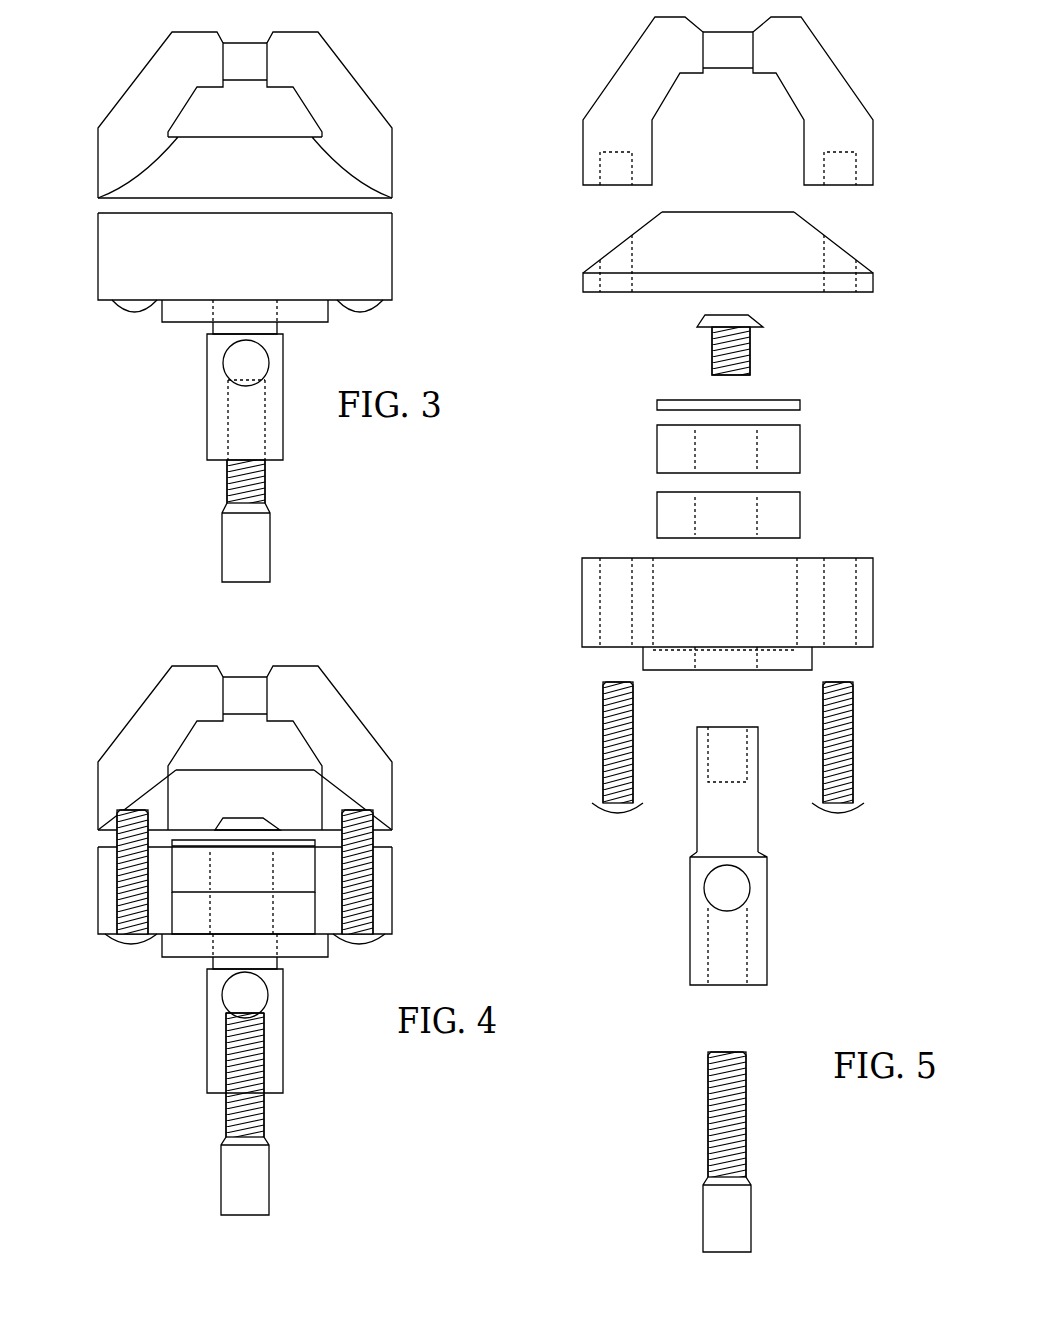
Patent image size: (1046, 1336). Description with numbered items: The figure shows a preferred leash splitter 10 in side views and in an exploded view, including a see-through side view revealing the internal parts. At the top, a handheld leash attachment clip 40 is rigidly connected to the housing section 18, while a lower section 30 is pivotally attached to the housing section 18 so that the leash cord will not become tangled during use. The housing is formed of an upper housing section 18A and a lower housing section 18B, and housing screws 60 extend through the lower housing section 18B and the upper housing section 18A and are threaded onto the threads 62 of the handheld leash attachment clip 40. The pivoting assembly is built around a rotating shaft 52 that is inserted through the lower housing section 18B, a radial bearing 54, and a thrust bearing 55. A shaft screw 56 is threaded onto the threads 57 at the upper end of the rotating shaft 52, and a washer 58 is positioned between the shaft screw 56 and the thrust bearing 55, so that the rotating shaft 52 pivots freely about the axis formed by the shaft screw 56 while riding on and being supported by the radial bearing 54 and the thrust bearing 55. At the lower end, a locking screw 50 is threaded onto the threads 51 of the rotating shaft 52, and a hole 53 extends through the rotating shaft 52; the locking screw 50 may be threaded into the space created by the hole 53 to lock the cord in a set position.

In FIG. 3, the leash splitter 10 is at (272, 307).
In FIG. 4, the leash splitter 10 is at (244, 936).
In FIG. 5, the leash splitter 10 is at (722, 634).
In FIG. 3, the housing section 18 is at (148, 322).
In FIG. 4, the upper housing section 18A is at (173, 773).
In FIG. 5, the upper housing section 18A is at (575, 278).
In FIG. 4, the lower housing section 18B is at (162, 947).
In FIG. 5, the lower housing section 18B is at (582, 630).
In FIG. 3, the lower section 30 is at (195, 405).
In FIG. 4, the lower section 30 is at (248, 1086).
In FIG. 3, the handheld leash attachment clip 40 is at (373, 102).
In FIG. 5, the handheld leash attachment clip 40 is at (613, 77).
In FIG. 4, the locking screw 50 is at (267, 1178).
In FIG. 5, the locking screw 50 is at (755, 1190).
In FIG. 5, the threads 51 is at (747, 962).
In FIG. 4, the rotating shaft 52 is at (283, 1060).
In FIG. 5, the rotating shaft 52 is at (697, 838).
In FIG. 5, the hole 53 is at (752, 898).
In FIG. 4, the radial bearing 54 is at (303, 918).
In FIG. 5, the radial bearing 54 is at (802, 517).
In FIG. 4, the thrust bearing 55 is at (303, 875).
In FIG. 5, the thrust bearing 55 is at (802, 458).
In FIG. 4, the shaft screw 56 is at (265, 823).
In FIG. 5, the shaft screw 56 is at (708, 352).
In FIG. 5, the threads 57 is at (747, 743).
In FIG. 4, the washer 58 is at (310, 834).
In FIG. 5, the washer 58 is at (805, 405).
In FIG. 4, the housing screws 60 is at (110, 938).
In FIG. 5, the housing screws 60 is at (602, 763).
In FIG. 5, the threads 62 is at (600, 165).